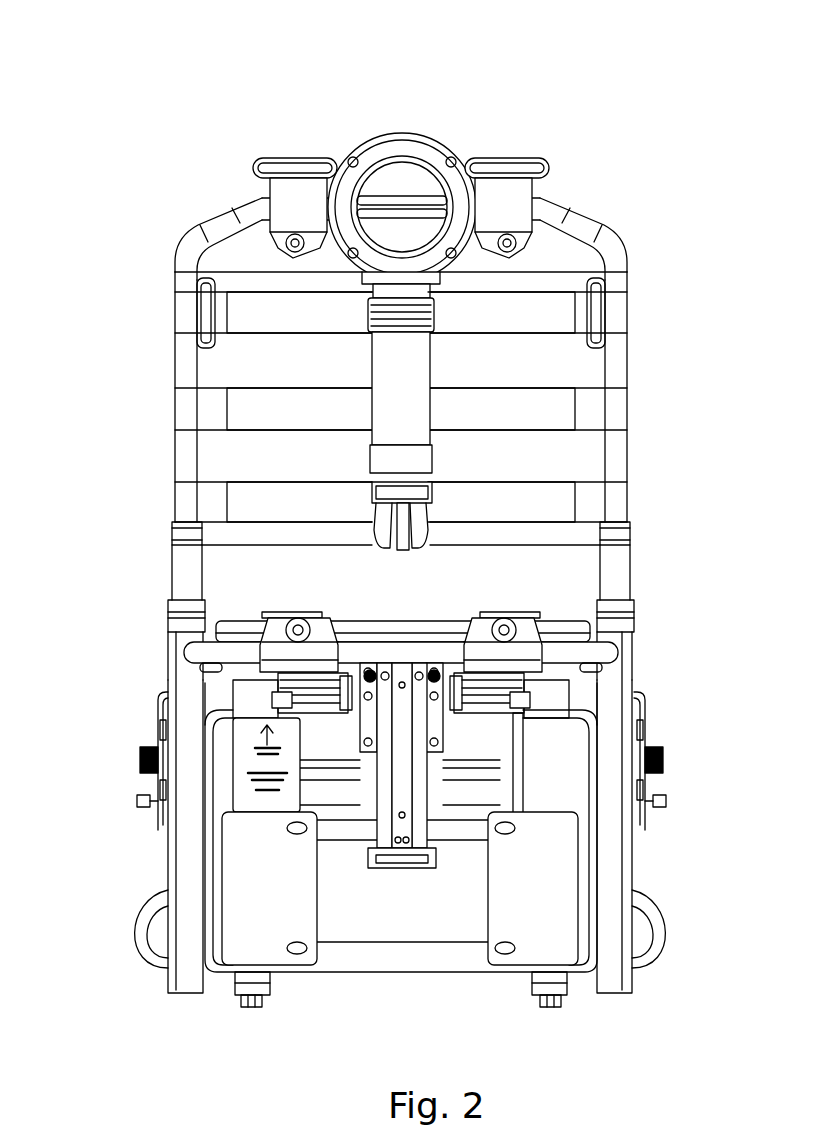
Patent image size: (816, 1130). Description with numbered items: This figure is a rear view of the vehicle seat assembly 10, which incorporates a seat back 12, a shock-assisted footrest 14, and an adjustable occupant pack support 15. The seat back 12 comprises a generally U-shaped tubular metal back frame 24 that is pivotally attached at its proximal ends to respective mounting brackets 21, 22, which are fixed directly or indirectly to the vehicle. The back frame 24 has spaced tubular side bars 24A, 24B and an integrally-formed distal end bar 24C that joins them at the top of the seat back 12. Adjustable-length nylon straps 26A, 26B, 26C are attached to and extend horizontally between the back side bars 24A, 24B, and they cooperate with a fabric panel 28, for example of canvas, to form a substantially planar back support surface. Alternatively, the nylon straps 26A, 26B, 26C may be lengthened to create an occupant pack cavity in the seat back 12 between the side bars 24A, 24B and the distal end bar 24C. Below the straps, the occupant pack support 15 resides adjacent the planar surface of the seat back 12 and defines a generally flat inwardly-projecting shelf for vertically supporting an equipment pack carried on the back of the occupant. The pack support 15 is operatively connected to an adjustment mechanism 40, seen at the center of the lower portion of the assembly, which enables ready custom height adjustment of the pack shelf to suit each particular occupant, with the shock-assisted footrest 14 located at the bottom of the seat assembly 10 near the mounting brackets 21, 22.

The seat assembly 10 is at (152, 136).
The seat back 12 is at (656, 236).
The shock-assisted footrest 14 is at (650, 955).
The adjustable occupant pack support 15 is at (355, 630).
The mounting bracket 21 is at (187, 863).
The mounting bracket 22 is at (610, 873).
The back frame 24 is at (178, 560).
The back side bar 24A is at (177, 357).
The back side bar 24B is at (615, 457).
The distal end bar 24C is at (543, 203).
The adjustable-length nylon strap 26A is at (617, 317).
The adjustable-length nylon strap 26B is at (617, 407).
The adjustable-length nylon strap 26C is at (622, 508).
The fabric panel 28 is at (227, 453).
The adjustment mechanism 40 is at (402, 880).